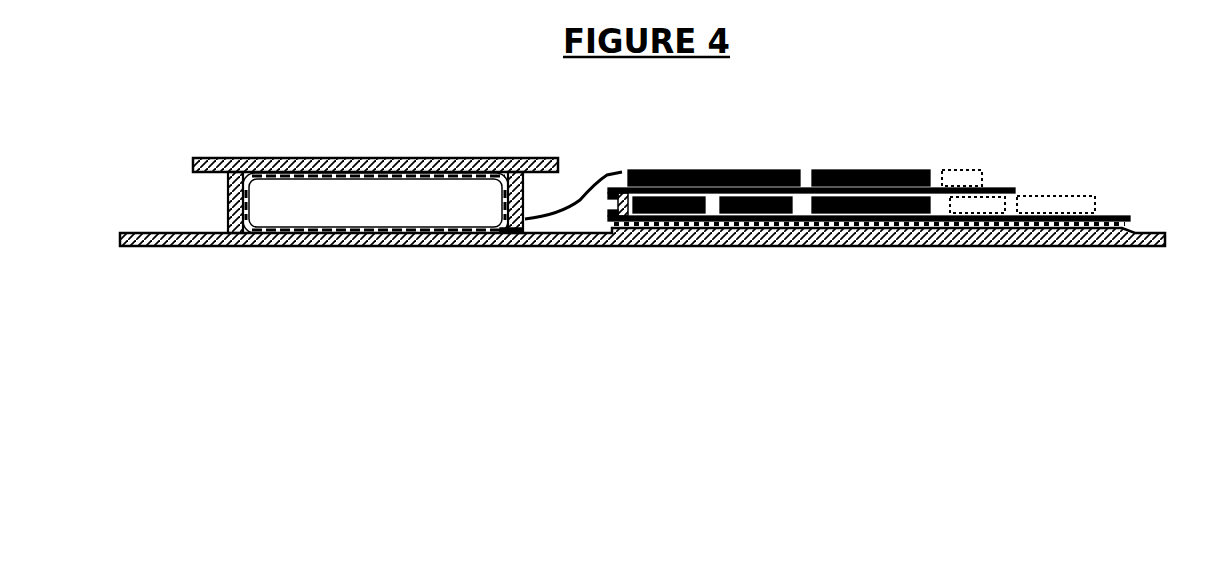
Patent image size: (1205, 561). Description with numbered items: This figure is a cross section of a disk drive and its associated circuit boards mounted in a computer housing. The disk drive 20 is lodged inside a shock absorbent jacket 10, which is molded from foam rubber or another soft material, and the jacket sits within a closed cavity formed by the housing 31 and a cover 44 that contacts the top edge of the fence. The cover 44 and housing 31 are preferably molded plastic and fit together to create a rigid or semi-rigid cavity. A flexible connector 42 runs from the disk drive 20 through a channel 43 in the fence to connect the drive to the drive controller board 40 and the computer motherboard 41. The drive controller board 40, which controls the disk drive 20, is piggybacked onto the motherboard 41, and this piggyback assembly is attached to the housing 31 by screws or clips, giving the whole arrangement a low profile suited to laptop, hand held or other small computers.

The shock absorbent jacket 10 is at (228, 192).
The disk drive 20 is at (388, 208).
The housing 31 is at (933, 247).
The drive controller board 40 is at (985, 168).
The computer motherboard 41 is at (1099, 214).
The flexible connector 42 is at (592, 172).
The channel 43 is at (509, 242).
The cover 44 is at (265, 158).